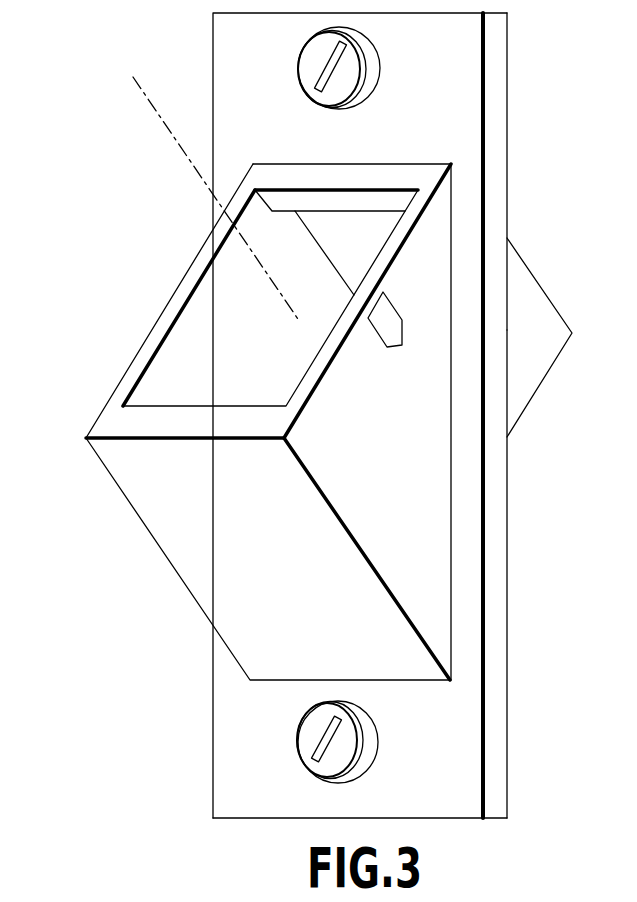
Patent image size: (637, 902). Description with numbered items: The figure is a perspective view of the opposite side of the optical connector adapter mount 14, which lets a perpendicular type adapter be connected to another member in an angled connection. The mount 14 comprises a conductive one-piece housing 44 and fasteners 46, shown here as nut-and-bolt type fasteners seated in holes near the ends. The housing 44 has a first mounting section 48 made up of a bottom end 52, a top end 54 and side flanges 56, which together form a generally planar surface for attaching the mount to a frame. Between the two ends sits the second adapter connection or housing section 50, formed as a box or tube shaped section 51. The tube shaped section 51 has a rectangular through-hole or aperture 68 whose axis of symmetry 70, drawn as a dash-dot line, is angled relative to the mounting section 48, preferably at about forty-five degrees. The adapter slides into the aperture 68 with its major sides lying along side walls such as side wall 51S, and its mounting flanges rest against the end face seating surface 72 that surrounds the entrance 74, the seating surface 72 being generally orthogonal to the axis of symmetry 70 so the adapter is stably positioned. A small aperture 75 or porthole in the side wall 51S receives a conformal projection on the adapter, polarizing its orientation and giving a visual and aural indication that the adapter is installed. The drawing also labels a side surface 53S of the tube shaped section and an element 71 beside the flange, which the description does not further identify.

The mount 14 is at (299, 415).
The housing 44 is at (497, 222).
The fasteners 46 is at (372, 70).
The first mounting section 48 is at (492, 550).
The housing section 50 is at (152, 498).
The tube shaped section 51 is at (100, 407).
The side wall 51S is at (423, 401).
The bottom end 52 is at (227, 775).
The side surface of housing 53S is at (148, 337).
The top end 54 is at (465, 100).
The side flanges 56 is at (467, 508).
The aperture 68 is at (261, 298).
The axis of symmetry 70 is at (165, 123).
The tab / projection 71 is at (540, 312).
The seating surface 72 is at (105, 420).
The entrance 74 is at (188, 293).
The aperture 75 is at (383, 313).